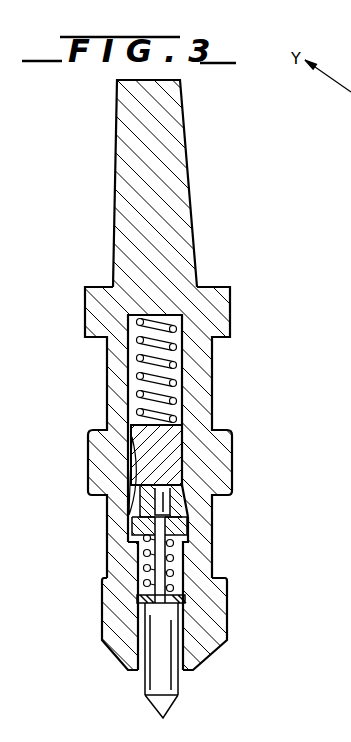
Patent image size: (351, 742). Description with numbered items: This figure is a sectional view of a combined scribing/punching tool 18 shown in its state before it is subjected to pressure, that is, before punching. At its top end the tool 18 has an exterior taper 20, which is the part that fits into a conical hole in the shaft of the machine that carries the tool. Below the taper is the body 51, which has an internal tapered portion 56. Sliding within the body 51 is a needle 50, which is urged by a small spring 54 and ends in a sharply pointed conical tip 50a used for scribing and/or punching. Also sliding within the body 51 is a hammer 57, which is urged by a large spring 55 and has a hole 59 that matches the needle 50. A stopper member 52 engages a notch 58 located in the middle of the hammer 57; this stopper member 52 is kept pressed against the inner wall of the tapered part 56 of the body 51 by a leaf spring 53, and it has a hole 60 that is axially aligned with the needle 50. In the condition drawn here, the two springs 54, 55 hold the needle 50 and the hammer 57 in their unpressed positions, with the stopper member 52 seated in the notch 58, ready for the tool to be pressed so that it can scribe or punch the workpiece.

The combined scribing/punching tool 18 is at (178, 212).
The exterior taper 20 is at (187, 150).
The needle 50 is at (182, 680).
The needle tip 50a is at (160, 716).
The body 51 is at (228, 606).
The stopper member 52 is at (168, 503).
The leaf spring 53 is at (128, 472).
The small spring 54 is at (171, 557).
The large spring 55 is at (172, 369).
The internal tapered portion 56 is at (183, 523).
The hammer 57 is at (163, 455).
The notch 58 is at (127, 468).
The hole 59 is at (138, 522).
The hole 60 is at (184, 487).